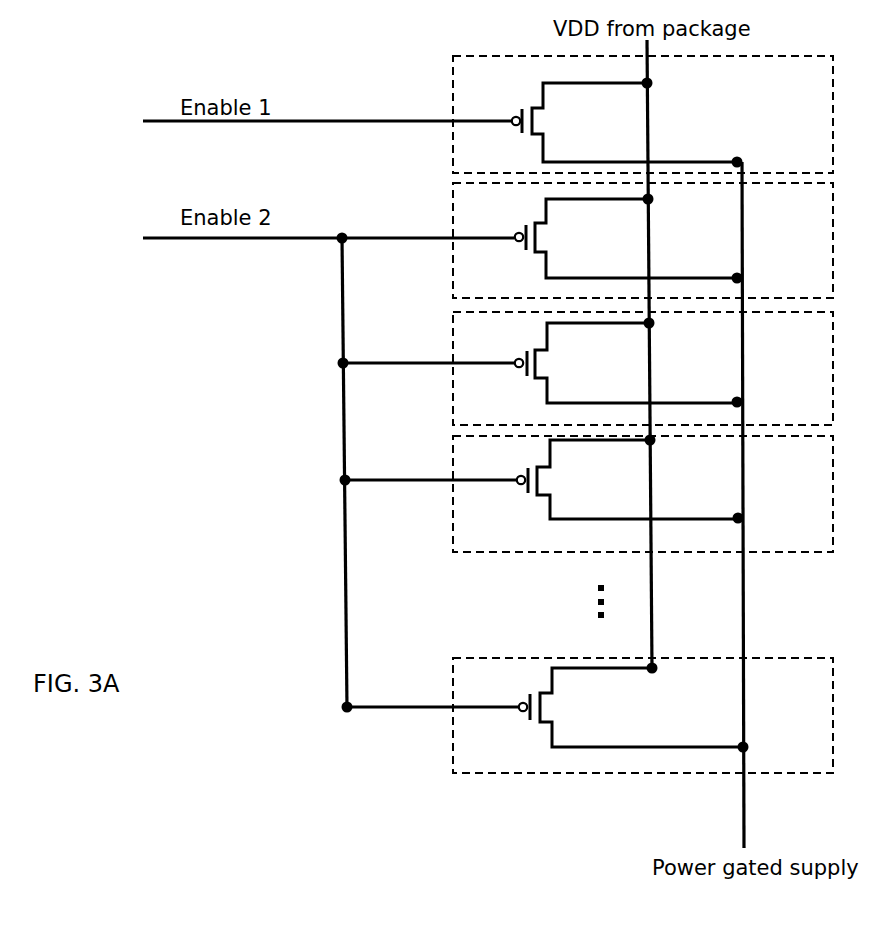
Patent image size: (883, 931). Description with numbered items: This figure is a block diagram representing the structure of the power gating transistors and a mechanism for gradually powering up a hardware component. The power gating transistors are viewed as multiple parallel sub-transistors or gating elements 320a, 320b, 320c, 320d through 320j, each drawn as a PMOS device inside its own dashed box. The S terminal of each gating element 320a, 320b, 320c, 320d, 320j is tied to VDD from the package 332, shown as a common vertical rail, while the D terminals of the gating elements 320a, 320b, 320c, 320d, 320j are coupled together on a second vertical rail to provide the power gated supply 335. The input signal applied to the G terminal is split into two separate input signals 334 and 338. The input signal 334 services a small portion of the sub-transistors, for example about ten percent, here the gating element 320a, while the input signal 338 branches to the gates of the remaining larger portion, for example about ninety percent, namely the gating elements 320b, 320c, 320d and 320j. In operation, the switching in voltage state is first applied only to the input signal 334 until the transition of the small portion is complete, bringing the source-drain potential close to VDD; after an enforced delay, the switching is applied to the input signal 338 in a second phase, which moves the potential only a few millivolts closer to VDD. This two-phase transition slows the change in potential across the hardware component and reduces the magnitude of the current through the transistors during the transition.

The VDD from the package 332 is at (653, 596).
The power gated supply 335 is at (745, 592).
The input signal 334 is at (297, 121).
The input signal 338 is at (180, 239).
The gating element 320a is at (823, 167).
The gating element 320b is at (823, 291).
The gating element 320c is at (822, 419).
The gating element 320d is at (823, 546).
The gating element 320j is at (820, 766).